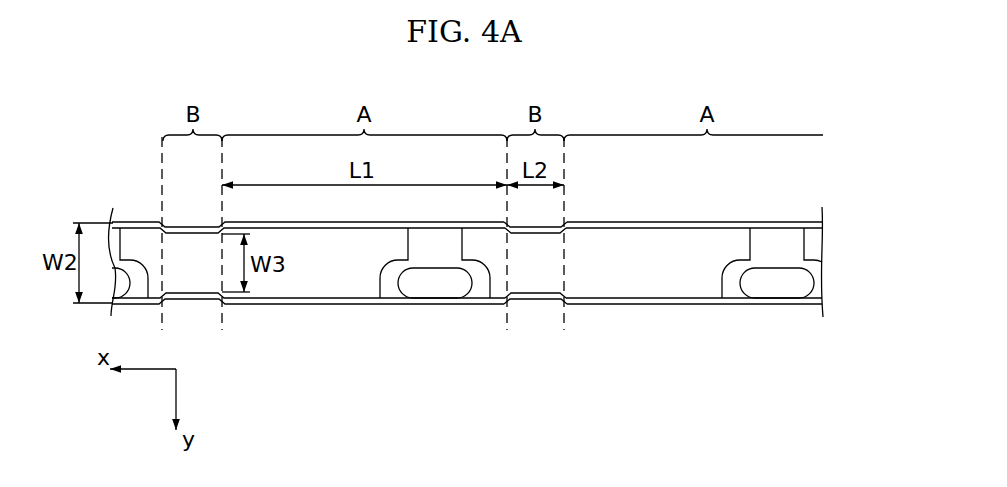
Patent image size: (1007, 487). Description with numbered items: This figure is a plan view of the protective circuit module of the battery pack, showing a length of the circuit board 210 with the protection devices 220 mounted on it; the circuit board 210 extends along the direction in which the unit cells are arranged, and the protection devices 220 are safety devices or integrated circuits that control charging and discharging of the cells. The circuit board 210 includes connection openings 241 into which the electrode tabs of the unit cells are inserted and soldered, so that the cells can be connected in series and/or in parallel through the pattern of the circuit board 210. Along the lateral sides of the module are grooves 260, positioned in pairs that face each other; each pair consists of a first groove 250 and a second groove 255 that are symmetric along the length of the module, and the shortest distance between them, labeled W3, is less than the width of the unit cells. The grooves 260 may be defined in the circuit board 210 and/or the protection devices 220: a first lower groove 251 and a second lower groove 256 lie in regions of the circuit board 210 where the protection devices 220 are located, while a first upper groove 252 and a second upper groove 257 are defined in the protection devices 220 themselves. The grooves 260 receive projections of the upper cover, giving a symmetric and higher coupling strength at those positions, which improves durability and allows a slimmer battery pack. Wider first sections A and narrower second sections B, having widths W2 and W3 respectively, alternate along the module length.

The circuit board 210 is at (777, 242).
The protection devices 220 is at (672, 243).
The connection openings 241 is at (777, 291).
The first groove 250 is at (495, 345).
The first lower groove 251 is at (530, 305).
The first upper groove 252 is at (518, 290).
The second groove 255 is at (576, 307).
The second lower groove 256 is at (544, 227).
The second upper groove 257 is at (535, 234).
The grooves 260 is at (536, 326).